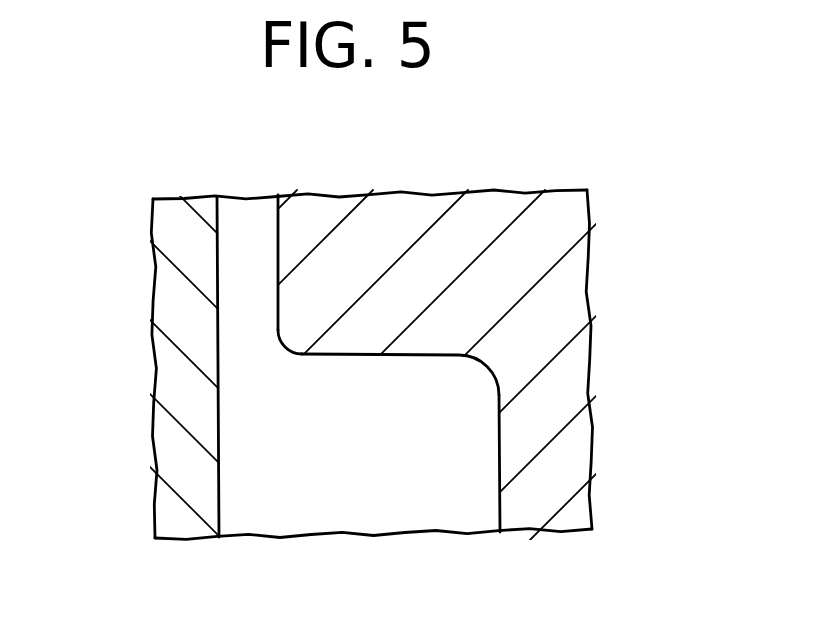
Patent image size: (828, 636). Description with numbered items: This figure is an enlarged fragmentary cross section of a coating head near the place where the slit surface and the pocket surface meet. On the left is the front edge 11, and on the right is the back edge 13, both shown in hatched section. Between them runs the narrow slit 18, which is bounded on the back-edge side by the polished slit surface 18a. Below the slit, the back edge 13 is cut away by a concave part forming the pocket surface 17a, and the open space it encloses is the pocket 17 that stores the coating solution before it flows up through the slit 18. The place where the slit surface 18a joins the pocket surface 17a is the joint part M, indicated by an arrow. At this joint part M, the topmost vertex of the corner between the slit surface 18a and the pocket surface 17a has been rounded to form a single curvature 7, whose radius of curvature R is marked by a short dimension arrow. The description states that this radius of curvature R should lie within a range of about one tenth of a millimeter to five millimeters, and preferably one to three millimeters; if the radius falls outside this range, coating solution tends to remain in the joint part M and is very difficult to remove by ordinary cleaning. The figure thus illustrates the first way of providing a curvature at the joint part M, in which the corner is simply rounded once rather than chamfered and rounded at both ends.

The front edge 11 is at (177, 332).
The back edge 13 is at (577, 344).
The slit 18 is at (226, 221).
The slit surface 18a is at (280, 218).
The curvature 7 is at (296, 355).
The pocket 17 is at (413, 512).
The pocket surface 17a is at (497, 431).
The radius of curvature R is at (319, 323).
The joint part M is at (288, 370).